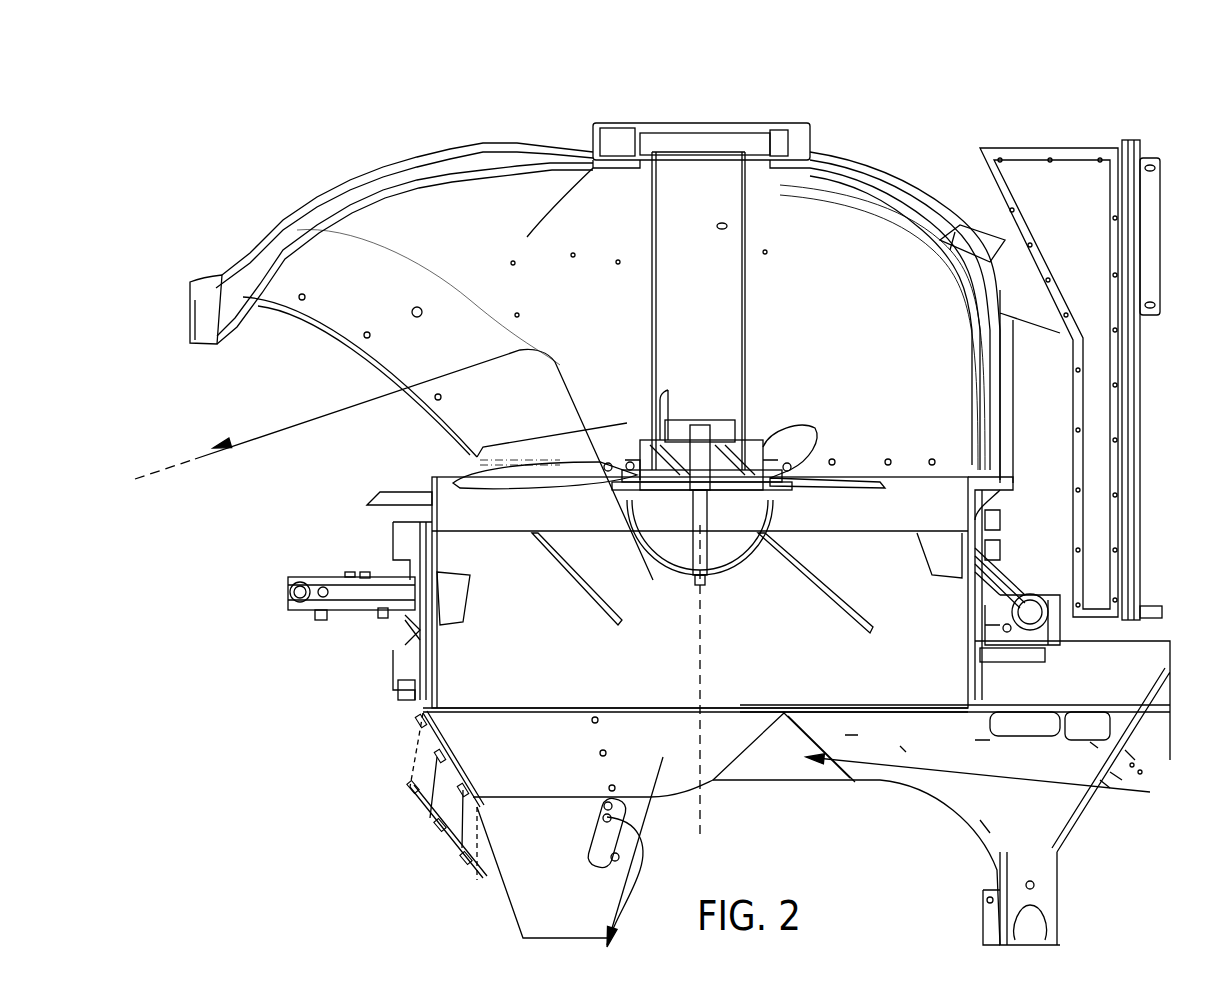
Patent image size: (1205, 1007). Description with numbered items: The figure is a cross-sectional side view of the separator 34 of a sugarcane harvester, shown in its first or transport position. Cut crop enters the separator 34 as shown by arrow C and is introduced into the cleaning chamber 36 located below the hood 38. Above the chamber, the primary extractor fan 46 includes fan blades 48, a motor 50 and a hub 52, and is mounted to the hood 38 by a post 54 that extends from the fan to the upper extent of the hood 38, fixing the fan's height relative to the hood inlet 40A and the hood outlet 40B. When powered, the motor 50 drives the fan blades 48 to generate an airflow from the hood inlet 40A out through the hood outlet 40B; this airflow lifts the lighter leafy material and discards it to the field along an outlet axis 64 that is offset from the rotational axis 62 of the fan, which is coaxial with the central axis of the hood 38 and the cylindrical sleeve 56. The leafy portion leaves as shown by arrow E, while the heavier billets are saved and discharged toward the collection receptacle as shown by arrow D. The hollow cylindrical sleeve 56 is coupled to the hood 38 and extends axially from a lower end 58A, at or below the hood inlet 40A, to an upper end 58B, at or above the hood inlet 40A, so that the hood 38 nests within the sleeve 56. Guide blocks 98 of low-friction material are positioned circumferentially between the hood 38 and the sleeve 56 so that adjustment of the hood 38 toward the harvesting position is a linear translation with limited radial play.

The separator 34 is at (1110, 103).
The cleaning chamber 36 is at (468, 745).
The hood 38 is at (518, 148).
The hood inlet 40A is at (484, 712).
The hood outlet 40B is at (393, 432).
The primary extractor fan 46 is at (850, 428).
The fan blades 48 is at (798, 440).
The motor 50 is at (698, 420).
The hub 52 is at (738, 558).
The post 54 is at (748, 216).
The cylindrical sleeve 56 is at (980, 680).
The lower end 58A is at (532, 712).
The upper end 58B is at (975, 550).
The rotational axis 62 is at (703, 812).
The outlet axis 64 is at (180, 463).
The guide blocks 98 is at (420, 615).
The arrow E is at (300, 425).
The arrow D is at (640, 860).
The arrow C is at (1130, 795).